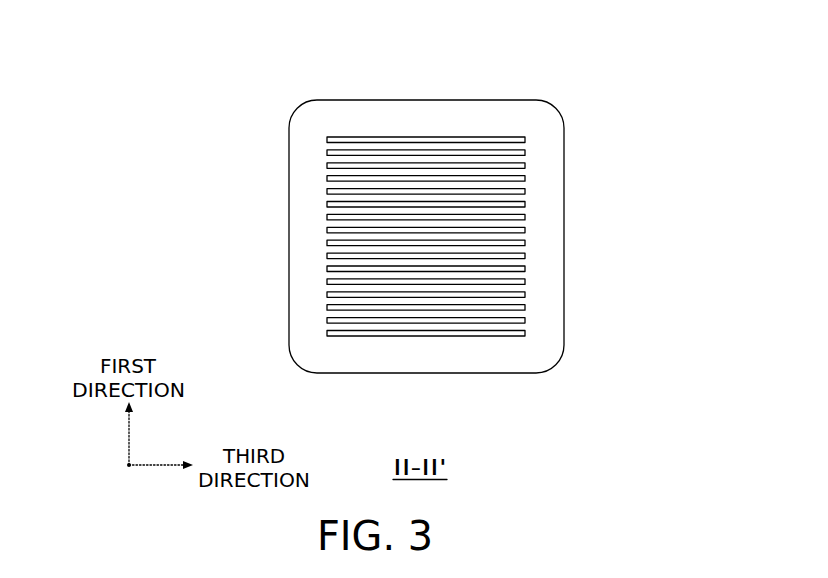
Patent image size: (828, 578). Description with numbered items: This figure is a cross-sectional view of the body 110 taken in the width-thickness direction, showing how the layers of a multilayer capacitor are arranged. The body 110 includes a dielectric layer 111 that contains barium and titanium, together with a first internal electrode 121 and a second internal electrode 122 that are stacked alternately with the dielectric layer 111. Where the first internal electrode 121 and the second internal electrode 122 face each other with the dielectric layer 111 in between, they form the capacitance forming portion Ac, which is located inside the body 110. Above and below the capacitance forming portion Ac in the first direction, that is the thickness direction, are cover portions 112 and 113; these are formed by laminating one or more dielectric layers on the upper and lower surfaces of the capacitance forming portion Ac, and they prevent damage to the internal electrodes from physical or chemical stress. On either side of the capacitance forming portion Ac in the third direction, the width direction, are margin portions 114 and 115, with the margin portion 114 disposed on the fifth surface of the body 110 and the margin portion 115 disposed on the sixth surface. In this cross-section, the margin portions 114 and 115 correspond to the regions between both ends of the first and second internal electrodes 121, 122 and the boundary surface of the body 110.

The body 110 is at (366, 100).
The dielectric layer 111 is at (357, 160).
The cover portion 112 is at (424, 112).
The cover portion 113 is at (427, 373).
The margin portion 114 is at (297, 237).
The margin portion 115 is at (557, 234).
The first internal electrode 121 is at (483, 142).
The second internal electrode 122 is at (508, 152).
The capacitance forming portion Ac is at (510, 337).